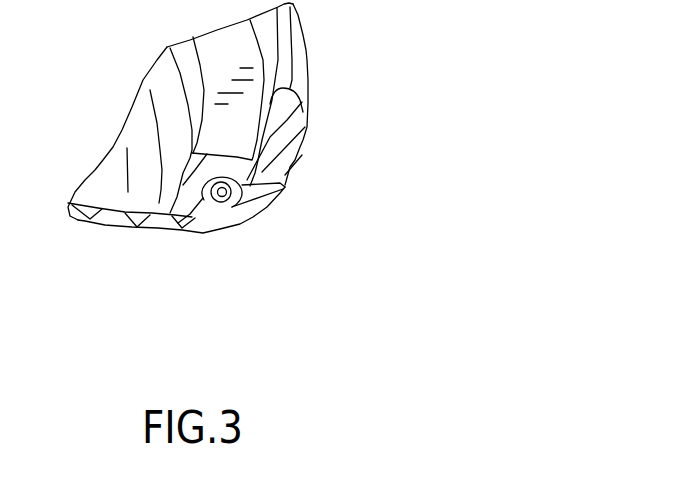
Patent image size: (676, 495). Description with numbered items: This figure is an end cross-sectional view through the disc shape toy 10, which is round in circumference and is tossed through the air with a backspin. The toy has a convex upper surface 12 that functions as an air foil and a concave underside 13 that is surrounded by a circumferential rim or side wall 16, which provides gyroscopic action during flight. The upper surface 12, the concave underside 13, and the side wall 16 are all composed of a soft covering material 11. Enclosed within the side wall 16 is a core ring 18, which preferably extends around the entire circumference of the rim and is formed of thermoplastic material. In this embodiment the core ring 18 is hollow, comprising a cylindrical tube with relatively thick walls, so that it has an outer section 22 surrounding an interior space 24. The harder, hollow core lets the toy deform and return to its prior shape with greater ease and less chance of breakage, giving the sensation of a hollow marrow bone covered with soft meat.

The disc shape toy 10 is at (441, 80).
The covering material 11 is at (300, 84).
The convex upper surface 12 is at (103, 228).
The concave underside 13 is at (127, 130).
The side wall 16 is at (307, 62).
The core ring 18 is at (285, 187).
The outer section 22 is at (210, 239).
The interior space 24 is at (239, 237).